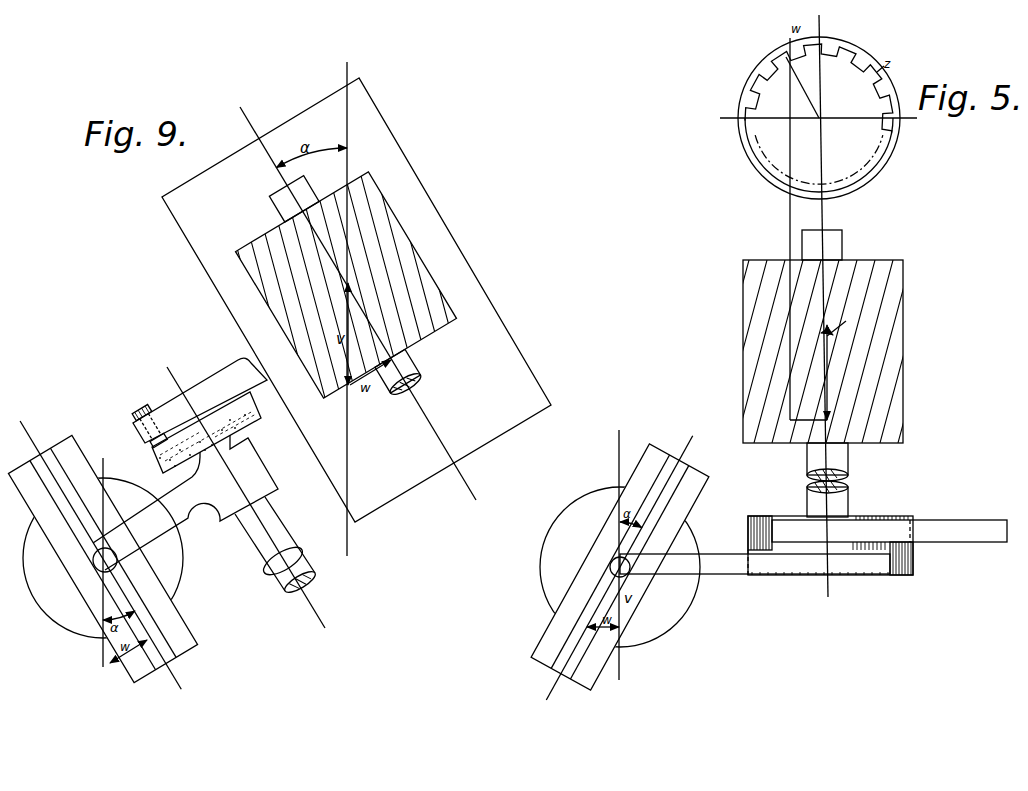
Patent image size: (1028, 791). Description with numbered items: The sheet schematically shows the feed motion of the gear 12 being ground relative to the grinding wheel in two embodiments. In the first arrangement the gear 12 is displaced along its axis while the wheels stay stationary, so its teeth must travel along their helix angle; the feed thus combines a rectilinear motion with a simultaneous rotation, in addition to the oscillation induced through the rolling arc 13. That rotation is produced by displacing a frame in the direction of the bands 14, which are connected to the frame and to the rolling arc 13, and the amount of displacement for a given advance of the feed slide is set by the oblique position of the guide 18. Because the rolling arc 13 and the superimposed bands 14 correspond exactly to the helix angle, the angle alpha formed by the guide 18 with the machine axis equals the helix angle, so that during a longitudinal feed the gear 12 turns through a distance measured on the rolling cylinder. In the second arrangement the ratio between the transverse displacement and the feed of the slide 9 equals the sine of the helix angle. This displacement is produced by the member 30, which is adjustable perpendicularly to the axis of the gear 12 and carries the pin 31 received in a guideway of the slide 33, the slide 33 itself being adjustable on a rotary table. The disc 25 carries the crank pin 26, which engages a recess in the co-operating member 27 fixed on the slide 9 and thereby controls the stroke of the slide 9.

In FIG. 9, the slide 9 is at (398, 158).
In FIG. 9, the gear 12 is at (432, 327).
In FIG. 5, the gear 12 is at (888, 265).
In FIG. 5, the rolling arc 13 is at (898, 574).
In FIG. 5, the bands 14 is at (945, 528).
In FIG. 5, the guide 18 is at (693, 492).
In FIG. 9, the disc 25 is at (248, 421).
In FIG. 9, the crank pin 26 is at (141, 409).
In FIG. 9, the co-operating member 27 is at (228, 377).
In FIG. 9, the member 30 is at (188, 519).
In FIG. 9, the pin 31 is at (92, 561).
In FIG. 9, the slide 33 is at (175, 632).